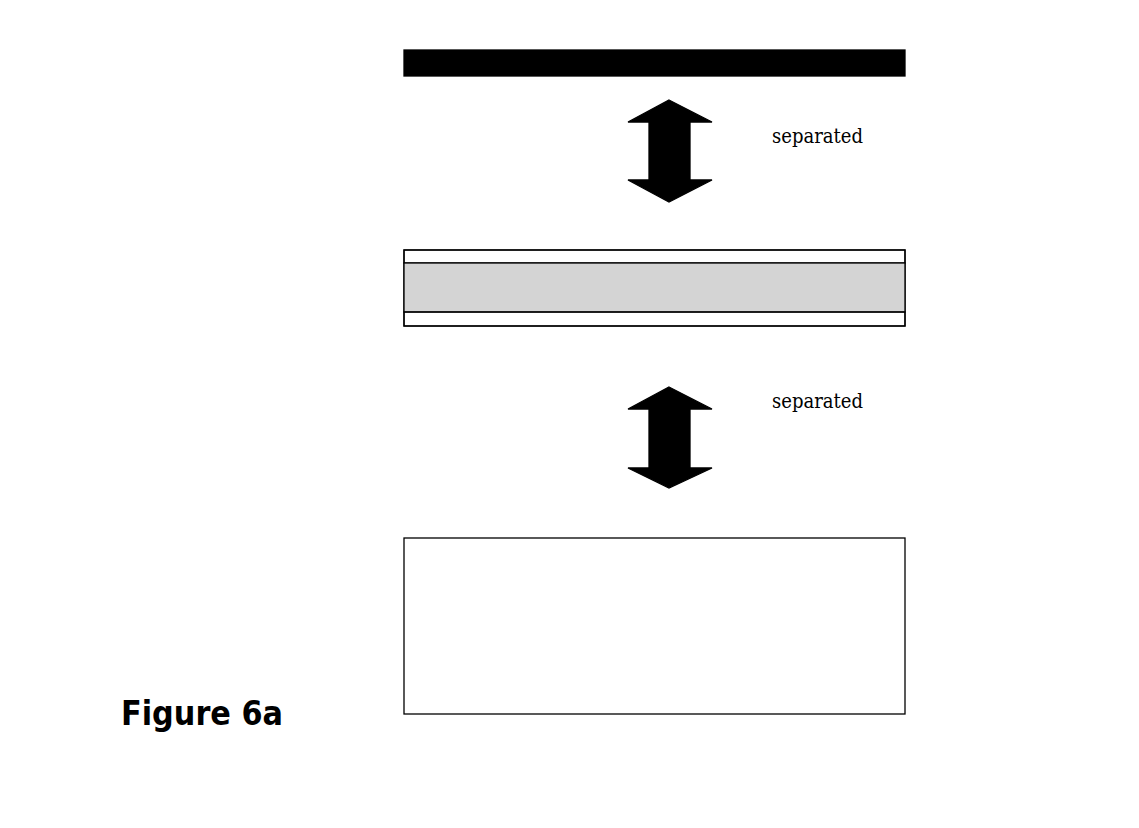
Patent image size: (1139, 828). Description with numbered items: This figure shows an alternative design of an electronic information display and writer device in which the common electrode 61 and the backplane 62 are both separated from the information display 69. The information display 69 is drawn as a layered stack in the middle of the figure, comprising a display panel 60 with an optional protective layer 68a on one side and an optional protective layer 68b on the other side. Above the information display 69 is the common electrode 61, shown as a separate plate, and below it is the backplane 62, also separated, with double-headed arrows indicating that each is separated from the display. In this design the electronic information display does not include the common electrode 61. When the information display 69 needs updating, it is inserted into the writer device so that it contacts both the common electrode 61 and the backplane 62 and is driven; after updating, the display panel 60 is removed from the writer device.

The common electrode 61 is at (916, 63).
The display panel 60 is at (916, 289).
The protective layer 68a is at (916, 327).
The protective layer 68b is at (916, 251).
The information display 69 is at (755, 288).
The backplane 62 is at (916, 627).